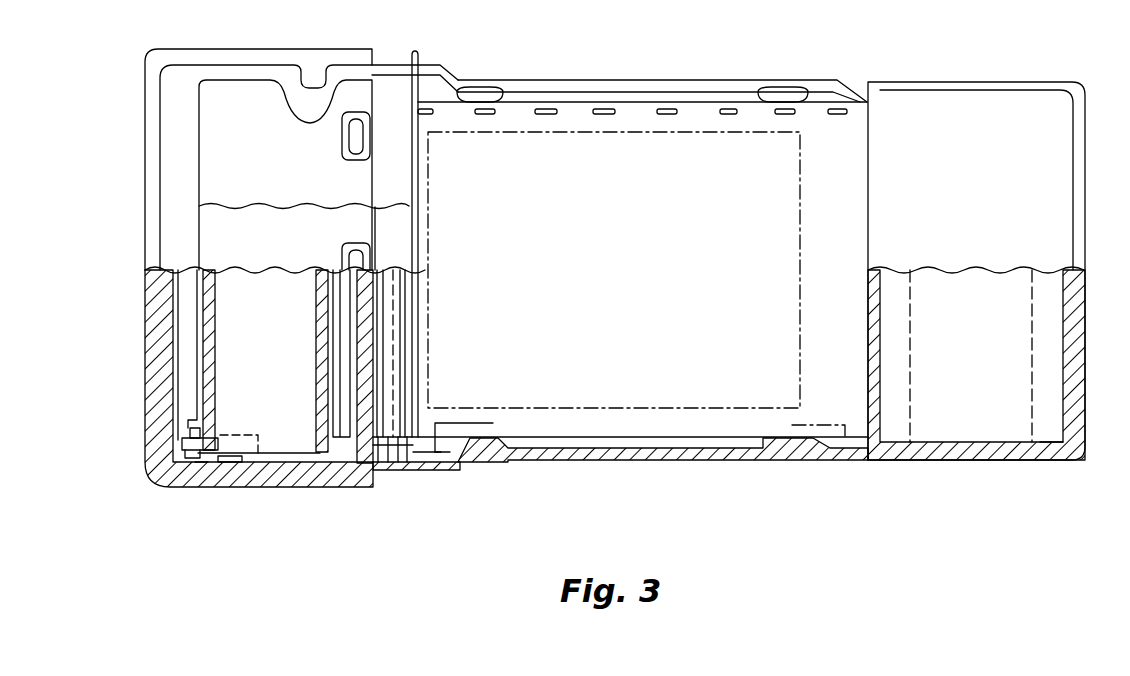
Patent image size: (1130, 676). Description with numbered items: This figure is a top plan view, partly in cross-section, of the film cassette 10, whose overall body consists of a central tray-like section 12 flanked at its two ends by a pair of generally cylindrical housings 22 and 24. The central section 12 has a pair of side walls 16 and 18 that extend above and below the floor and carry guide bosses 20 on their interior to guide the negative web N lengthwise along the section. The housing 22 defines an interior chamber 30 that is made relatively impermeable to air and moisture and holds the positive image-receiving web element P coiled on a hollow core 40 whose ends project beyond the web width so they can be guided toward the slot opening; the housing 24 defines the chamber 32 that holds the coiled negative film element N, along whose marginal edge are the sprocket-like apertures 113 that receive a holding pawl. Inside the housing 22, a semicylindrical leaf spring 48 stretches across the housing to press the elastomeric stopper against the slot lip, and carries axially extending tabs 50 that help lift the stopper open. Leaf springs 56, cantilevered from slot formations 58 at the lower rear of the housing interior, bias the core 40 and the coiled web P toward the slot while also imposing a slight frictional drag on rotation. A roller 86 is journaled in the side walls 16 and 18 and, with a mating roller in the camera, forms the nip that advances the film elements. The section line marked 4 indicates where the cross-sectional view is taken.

The cassette 10 is at (948, 76).
The central tray-like section 12 is at (745, 79).
The side wall 16 is at (560, 450).
The side wall 18 is at (657, 86).
The guide bosses 20 is at (480, 96).
The housing 22 is at (183, 162).
The housing 24 is at (1000, 182).
The chamber 30 is at (345, 455).
The chamber 32 is at (1050, 433).
The hollow core 40 is at (318, 352).
The semicylindrical leaf spring 48 is at (267, 155).
The axially extending tabs 50 is at (420, 52).
The leaf springs 56 is at (212, 432).
The slot formations 58 is at (202, 468).
The roller 86 is at (410, 462).
The sprocket-like apertures 113 is at (545, 116).
The positive film element P is at (192, 345).
The negative film element N is at (842, 247).
The section line 4- 4 is at (138, 453).